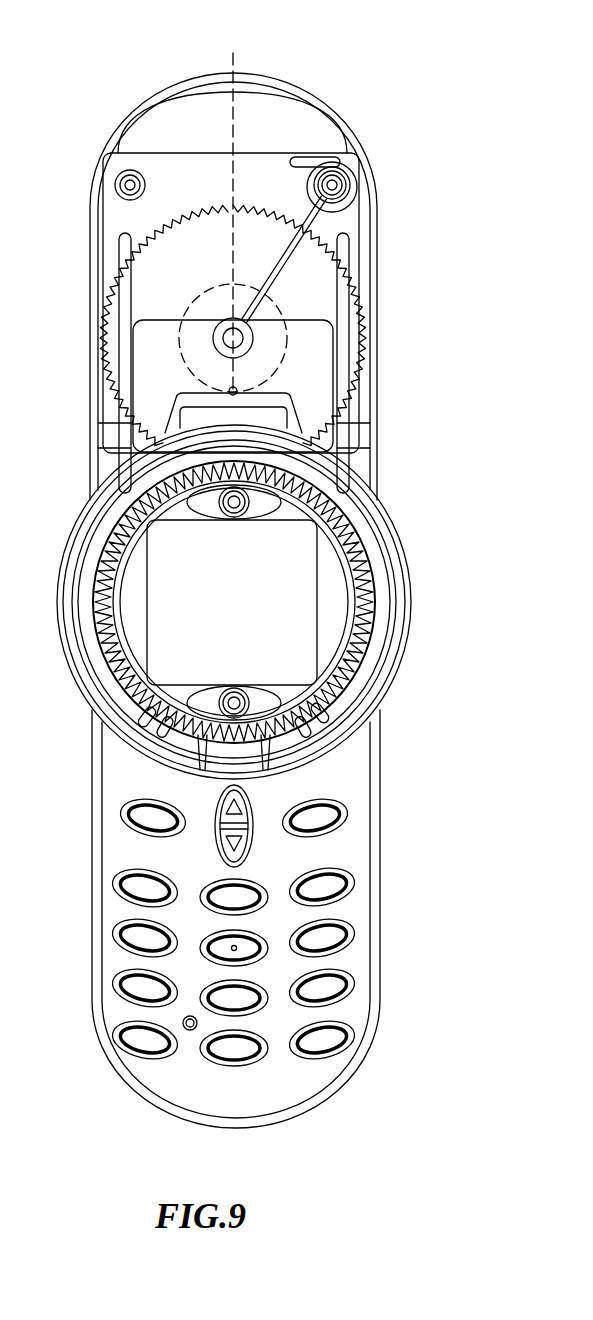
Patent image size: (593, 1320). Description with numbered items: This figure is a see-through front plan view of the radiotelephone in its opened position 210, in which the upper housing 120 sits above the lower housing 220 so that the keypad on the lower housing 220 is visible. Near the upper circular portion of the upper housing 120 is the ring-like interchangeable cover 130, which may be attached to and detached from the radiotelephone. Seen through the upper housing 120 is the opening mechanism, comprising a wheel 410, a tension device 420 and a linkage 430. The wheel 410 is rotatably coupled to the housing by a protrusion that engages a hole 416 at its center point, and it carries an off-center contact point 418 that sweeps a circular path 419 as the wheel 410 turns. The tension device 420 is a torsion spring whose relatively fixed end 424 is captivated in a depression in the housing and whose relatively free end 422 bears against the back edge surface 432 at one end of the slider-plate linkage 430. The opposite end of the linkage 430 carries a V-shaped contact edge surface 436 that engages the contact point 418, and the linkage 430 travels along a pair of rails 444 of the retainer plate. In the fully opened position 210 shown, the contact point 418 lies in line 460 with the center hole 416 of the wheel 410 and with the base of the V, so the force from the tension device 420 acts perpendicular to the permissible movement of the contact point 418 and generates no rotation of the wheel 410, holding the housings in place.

The opened position 210 is at (182, 70).
The upper housing 120 is at (376, 259).
The interchangeable cover 130 is at (95, 670).
The lower housing 220 is at (92, 940).
The wheel 410 is at (212, 212).
The hole 416 is at (213, 339).
The contact point 418 is at (238, 392).
The path 419 is at (192, 302).
The tension device 420 is at (352, 181).
The relatively free end 422 is at (280, 268).
The relatively fixed end 424 is at (312, 160).
The linkage 430 is at (318, 350).
The back edge surface 432 is at (272, 316).
The contact edge surface 436 is at (190, 398).
The rails 444 is at (123, 303).
The line 460 is at (228, 126).